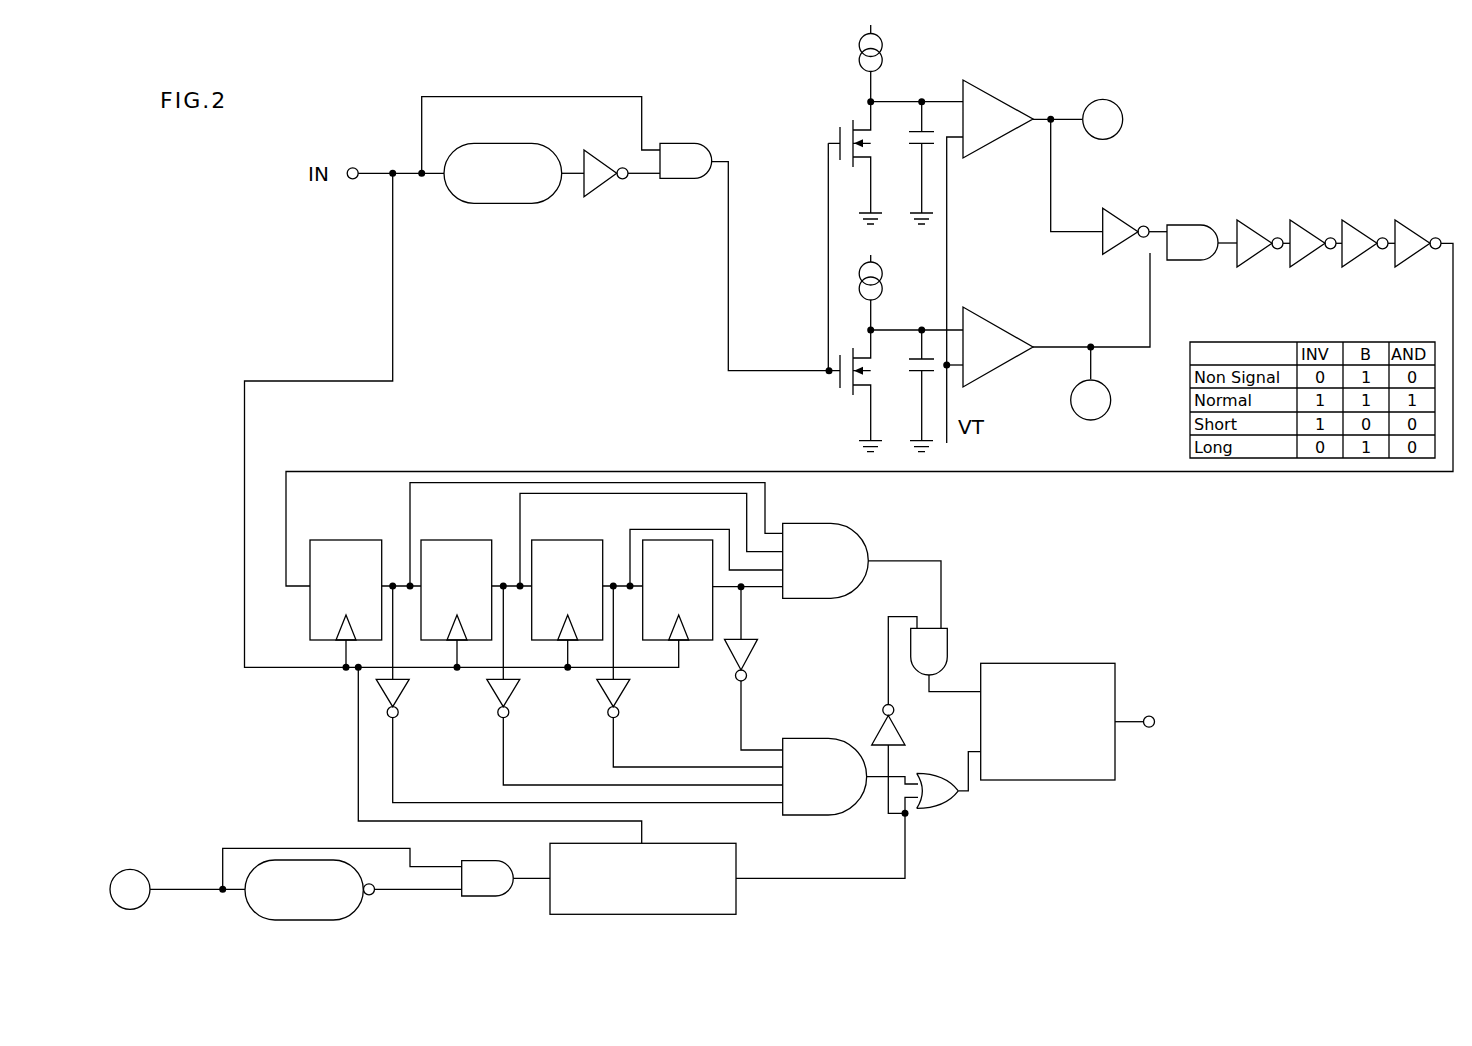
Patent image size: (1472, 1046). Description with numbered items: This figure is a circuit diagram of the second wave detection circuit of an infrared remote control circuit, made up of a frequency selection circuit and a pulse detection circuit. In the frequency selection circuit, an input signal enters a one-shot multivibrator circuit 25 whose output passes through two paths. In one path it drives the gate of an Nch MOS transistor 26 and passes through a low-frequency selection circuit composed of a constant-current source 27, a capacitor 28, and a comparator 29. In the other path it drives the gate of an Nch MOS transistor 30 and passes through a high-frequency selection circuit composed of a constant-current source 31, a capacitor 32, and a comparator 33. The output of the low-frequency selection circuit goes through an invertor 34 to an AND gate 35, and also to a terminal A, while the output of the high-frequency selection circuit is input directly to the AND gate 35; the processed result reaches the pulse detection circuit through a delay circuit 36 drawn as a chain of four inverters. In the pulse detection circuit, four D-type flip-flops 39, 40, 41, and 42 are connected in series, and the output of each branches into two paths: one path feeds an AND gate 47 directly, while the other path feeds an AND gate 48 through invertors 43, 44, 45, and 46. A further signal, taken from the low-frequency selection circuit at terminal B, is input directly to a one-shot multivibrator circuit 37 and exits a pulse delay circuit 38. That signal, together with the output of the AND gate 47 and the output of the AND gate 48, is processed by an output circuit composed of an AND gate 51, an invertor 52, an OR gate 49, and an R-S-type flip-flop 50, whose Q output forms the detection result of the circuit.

The one-shot multivibrator circuit 25 is at (556, 97).
The Nch MOS transistor 26 is at (847, 120).
The constant-current source 27 is at (883, 58).
The capacitor 28 is at (909, 145).
The comparator 29 is at (994, 142).
The Nch MOS transistor 30 is at (852, 395).
The constant-current source 31 is at (883, 286).
The capacitor 32 is at (909, 373).
The comparator 33 is at (996, 370).
The invertor 34 is at (1118, 213).
The AND gate 35 is at (1193, 225).
The delay circuit 36 is at (1445, 280).
The one-shot multivibrator circuit 37 is at (286, 848).
The pulse delay circuit 38 is at (736, 897).
The D-type flip-flop 39 is at (332, 540).
The D-type flip-flop 40 is at (442, 540).
The D-type flip-flop 41 is at (552, 540).
The D-type flip-flop 42 is at (702, 640).
The invertor 43 is at (401, 693).
The invertor 44 is at (511, 693).
The invertor 45 is at (621, 693).
The invertor 46 is at (750, 653).
The AND gate 47 is at (810, 598).
The AND gate 48 is at (808, 815).
The OR gate 49 is at (940, 808).
The R-S-type flip-flop 50 is at (1080, 780).
The AND gate 51 is at (948, 637).
The invertor 52 is at (900, 734).